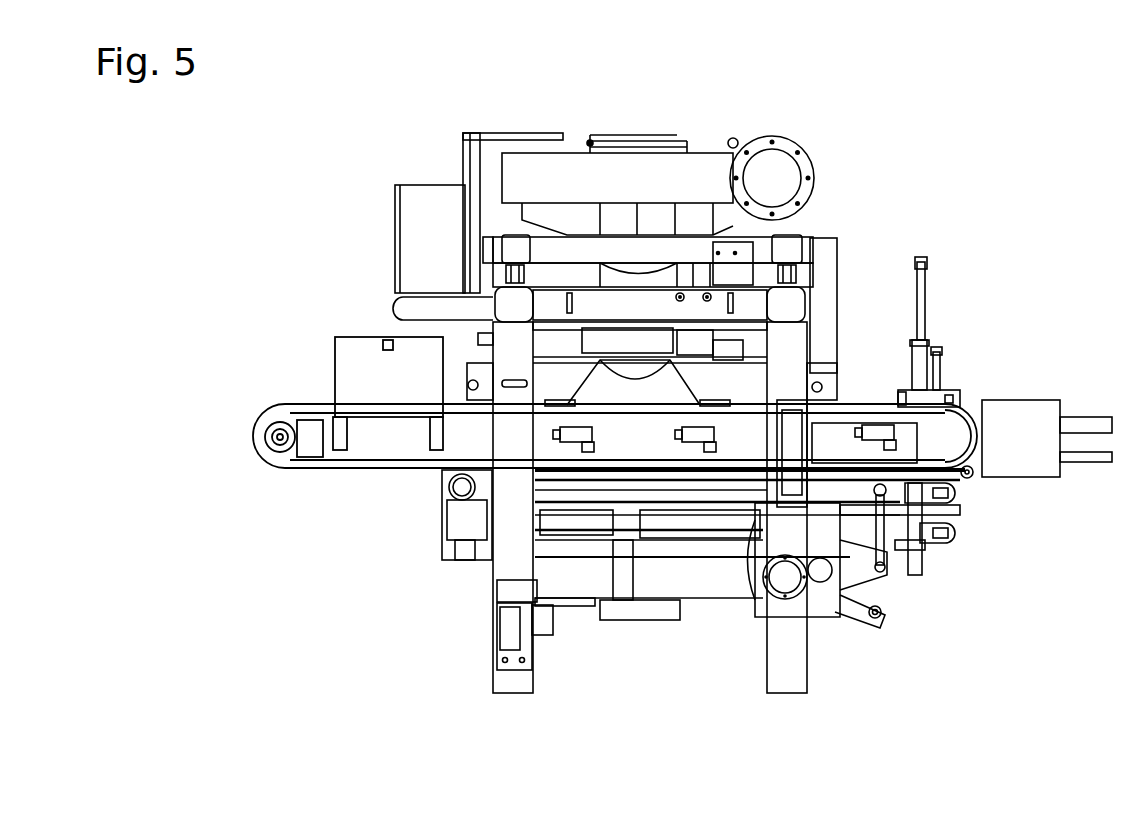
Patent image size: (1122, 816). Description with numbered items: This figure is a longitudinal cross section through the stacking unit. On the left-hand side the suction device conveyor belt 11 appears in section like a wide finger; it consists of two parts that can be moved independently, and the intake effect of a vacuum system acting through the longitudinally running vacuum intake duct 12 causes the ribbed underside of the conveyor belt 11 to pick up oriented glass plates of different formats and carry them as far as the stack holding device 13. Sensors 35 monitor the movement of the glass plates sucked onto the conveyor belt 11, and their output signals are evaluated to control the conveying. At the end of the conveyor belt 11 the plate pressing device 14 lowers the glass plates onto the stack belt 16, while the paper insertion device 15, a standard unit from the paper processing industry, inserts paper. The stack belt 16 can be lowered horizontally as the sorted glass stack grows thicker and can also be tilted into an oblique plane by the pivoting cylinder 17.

The suction device conveyor belt 11 is at (375, 443).
The vacuum intake duct 12 is at (625, 395).
The stack holding device 13 is at (925, 288).
The plate pressing device 14 is at (947, 373).
The paper insertion device 15 is at (1018, 465).
The stack belt 16 is at (957, 500).
The pivoting cylinder 17 is at (910, 570).
The sensors 35 is at (875, 433).